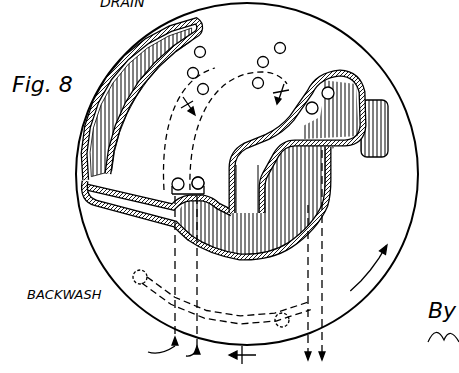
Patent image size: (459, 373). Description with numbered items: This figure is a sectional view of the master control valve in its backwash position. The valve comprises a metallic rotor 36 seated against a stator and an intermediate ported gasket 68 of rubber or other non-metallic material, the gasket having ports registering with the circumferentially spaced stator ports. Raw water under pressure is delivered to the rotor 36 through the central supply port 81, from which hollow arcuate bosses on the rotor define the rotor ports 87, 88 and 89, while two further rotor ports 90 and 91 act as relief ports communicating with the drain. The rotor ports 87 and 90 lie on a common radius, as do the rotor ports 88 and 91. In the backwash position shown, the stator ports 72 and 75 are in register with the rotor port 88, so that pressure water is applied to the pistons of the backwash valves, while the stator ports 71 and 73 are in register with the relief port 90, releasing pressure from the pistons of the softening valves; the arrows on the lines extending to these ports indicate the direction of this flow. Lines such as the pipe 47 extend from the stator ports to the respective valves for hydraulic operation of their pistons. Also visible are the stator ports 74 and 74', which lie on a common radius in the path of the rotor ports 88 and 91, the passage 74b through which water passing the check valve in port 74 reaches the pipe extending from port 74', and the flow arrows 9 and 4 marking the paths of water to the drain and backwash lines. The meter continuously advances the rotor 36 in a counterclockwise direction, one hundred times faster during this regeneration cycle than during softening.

The backwash outlet flow arrow 4 is at (248, 357).
The flow direction arrows 9 is at (232, 106).
The rotor 36 is at (412, 205).
The pipe 47 is at (349, 326).
The ported gasket 68 is at (236, 164).
The stator port 71 is at (172, 186).
The stator port 72 is at (306, 96).
The stator port 73 is at (201, 178).
The stator port 74 is at (225, 129).
The stator port 74' is at (211, 95).
The passage 74b is at (227, 72).
The stator port 75 is at (330, 85).
The central supply port 81 is at (247, 189).
The rotor port 87 is at (257, 249).
The rotor port 88 is at (345, 118).
The rotor port 89 is at (110, 123).
The relief port 90 is at (182, 177).
The relief port 91 is at (361, 154).